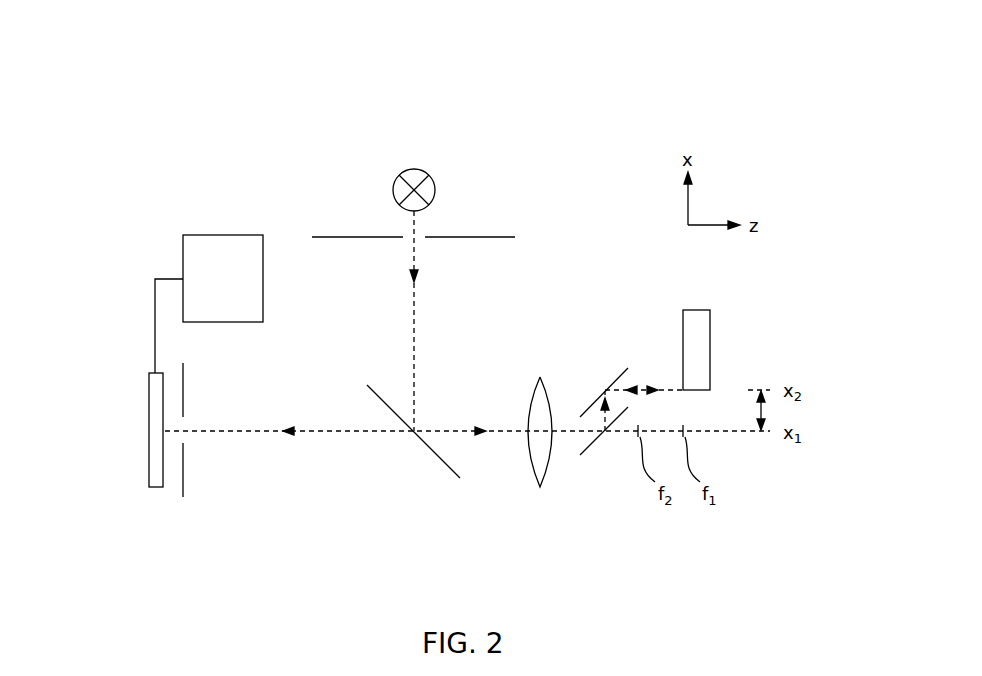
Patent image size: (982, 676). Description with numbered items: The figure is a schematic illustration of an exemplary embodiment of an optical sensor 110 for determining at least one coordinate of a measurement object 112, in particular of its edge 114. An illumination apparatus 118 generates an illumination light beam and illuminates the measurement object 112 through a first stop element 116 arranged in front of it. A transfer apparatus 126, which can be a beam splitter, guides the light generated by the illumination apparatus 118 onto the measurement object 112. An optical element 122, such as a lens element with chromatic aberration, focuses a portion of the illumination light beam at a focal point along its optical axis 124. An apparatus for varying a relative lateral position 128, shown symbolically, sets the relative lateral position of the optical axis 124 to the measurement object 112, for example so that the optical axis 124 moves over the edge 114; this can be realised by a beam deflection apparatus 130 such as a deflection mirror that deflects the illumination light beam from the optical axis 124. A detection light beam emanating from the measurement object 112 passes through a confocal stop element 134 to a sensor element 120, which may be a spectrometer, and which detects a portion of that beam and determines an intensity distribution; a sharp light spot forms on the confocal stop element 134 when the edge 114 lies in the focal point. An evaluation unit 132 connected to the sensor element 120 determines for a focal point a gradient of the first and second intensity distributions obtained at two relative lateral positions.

The optical sensor 110 is at (198, 134).
The measurement object 112 is at (716, 322).
The edge 114 is at (713, 392).
The first stop element 116 is at (481, 236).
The illumination apparatus 118 is at (410, 167).
The sensor element 120 is at (156, 489).
The optical element 122 is at (541, 488).
The optical axis 124 is at (322, 434).
The transfer apparatus 126 is at (437, 457).
The apparatus for varying a relative lateral position 128 is at (772, 405).
The beam deflection apparatus 130 is at (613, 370).
The evaluation unit 132 is at (240, 294).
The confocal stop element 134 is at (184, 476).